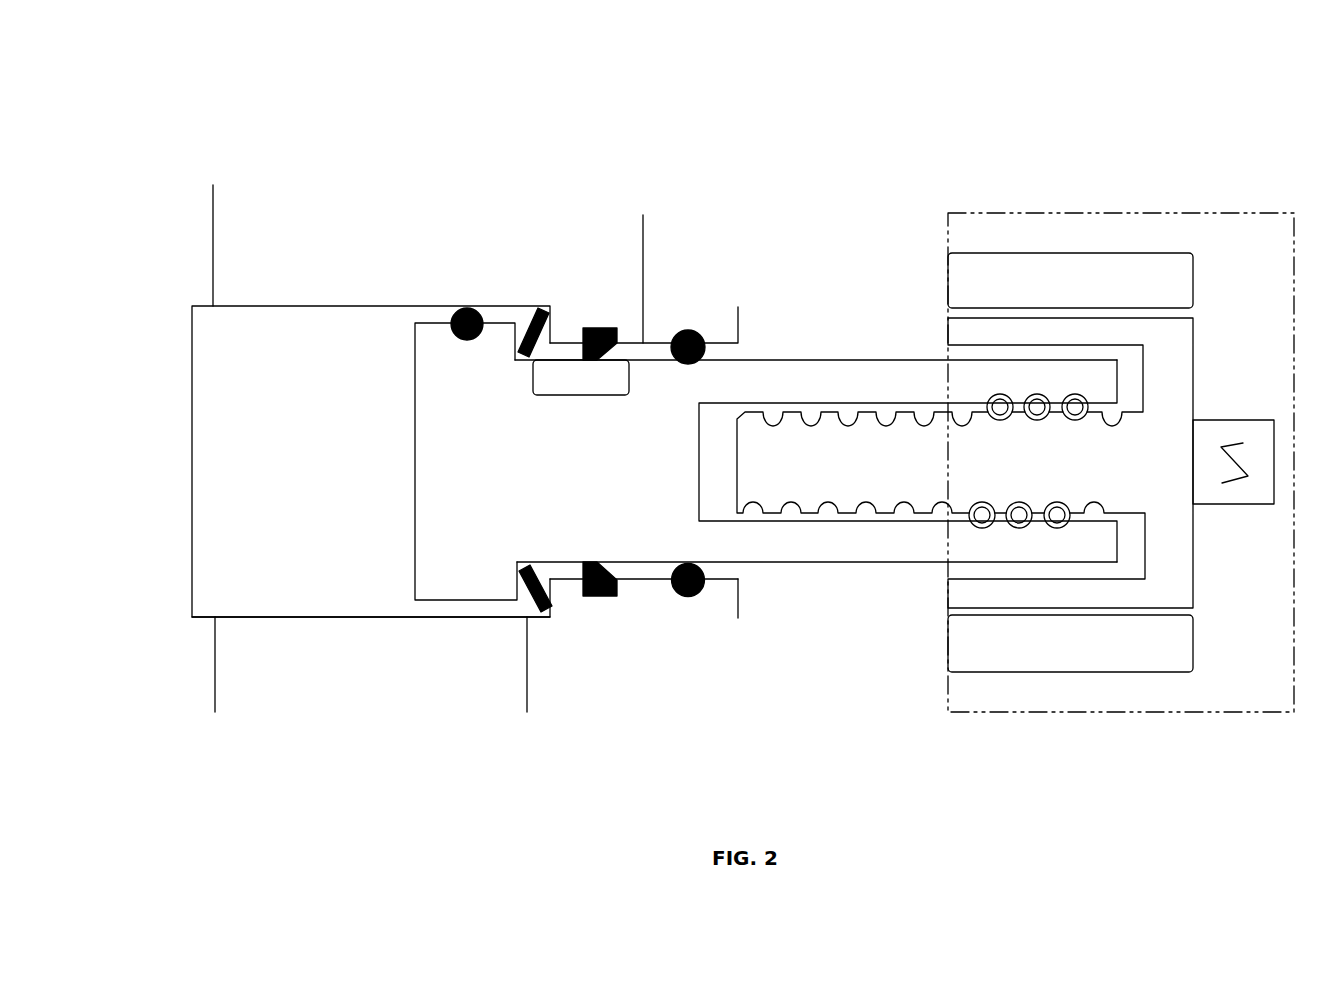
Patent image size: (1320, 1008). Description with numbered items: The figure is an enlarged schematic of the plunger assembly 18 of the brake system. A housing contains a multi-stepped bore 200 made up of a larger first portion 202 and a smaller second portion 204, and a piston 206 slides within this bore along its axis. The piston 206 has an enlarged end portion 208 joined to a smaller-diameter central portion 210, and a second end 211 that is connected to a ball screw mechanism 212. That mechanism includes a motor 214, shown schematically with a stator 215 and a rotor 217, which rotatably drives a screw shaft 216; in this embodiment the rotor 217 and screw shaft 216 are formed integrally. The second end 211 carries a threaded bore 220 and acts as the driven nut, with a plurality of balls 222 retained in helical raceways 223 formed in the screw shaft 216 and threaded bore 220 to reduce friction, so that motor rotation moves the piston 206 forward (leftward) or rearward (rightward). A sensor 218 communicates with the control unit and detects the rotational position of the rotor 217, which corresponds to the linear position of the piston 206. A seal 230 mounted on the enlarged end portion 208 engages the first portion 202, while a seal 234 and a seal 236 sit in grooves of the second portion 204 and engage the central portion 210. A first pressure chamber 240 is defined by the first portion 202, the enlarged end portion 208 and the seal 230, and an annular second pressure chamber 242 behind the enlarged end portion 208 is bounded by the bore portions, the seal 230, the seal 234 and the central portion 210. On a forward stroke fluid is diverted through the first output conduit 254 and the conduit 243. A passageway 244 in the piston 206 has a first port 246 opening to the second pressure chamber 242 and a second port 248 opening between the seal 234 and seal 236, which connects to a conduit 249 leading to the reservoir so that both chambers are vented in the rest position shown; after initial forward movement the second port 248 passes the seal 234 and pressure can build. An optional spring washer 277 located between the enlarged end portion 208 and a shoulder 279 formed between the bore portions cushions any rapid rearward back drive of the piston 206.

The plunger assembly 18 is at (890, 128).
The multi-stepped bore 200 is at (277, 613).
The first portion 202 is at (229, 312).
The second portion 204 is at (727, 578).
The piston 206 is at (745, 380).
The enlarged end portion 208 is at (430, 380).
The central portion 210 is at (785, 550).
The second end 211 is at (1030, 545).
The ball screw mechanism 212 is at (1208, 333).
The motor 214 is at (1152, 200).
The stator 215 is at (1012, 270).
The screw shaft 216 is at (815, 460).
The rotor 217 is at (982, 332).
The sensor 218 is at (1220, 504).
The threaded bore 220 is at (1036, 400).
The balls 222 is at (992, 400).
The helical raceways 223 is at (867, 508).
The seal 230 is at (462, 308).
The seal 234 is at (617, 595).
The seal 236 is at (692, 596).
The first pressure chamber 240 is at (233, 473).
The second pressure chamber 242 is at (525, 320).
The conduit 243 is at (527, 685).
The passageway 244 is at (583, 397).
The first port 246 is at (534, 360).
The second port 248 is at (628, 358).
The conduit 249 is at (643, 232).
The first output conduit 254 is at (215, 665).
The spring washer 277 is at (528, 595).
The shoulder 279 is at (545, 562).